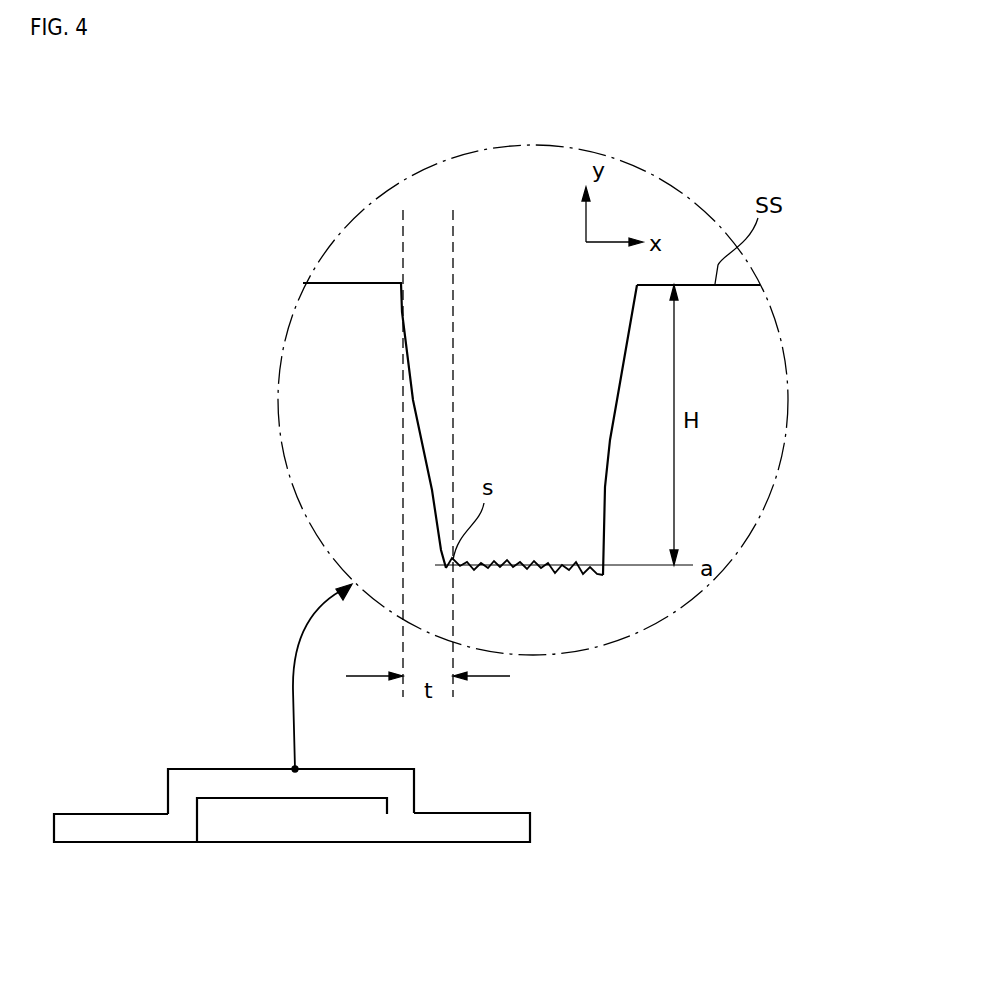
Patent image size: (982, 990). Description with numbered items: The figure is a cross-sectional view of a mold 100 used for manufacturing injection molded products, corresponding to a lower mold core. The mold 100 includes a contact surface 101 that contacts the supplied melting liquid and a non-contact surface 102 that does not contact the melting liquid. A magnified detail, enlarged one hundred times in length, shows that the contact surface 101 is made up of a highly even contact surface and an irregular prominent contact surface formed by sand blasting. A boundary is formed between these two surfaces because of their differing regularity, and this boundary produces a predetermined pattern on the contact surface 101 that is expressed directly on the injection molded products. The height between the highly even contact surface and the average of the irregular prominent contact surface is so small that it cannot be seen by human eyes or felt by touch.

The mold 100 is at (363, 805).
The contact surface 101 is at (222, 768).
The non-contact surface 102 is at (125, 843).